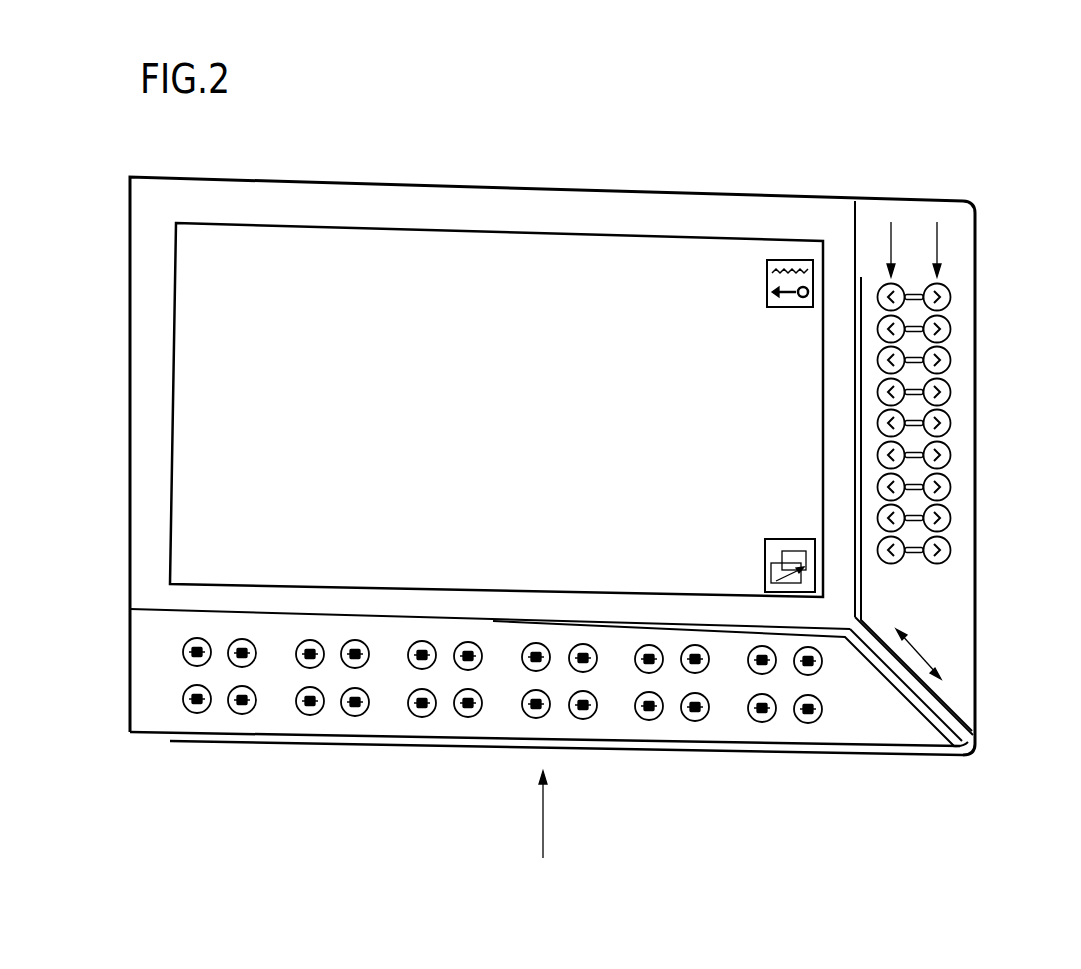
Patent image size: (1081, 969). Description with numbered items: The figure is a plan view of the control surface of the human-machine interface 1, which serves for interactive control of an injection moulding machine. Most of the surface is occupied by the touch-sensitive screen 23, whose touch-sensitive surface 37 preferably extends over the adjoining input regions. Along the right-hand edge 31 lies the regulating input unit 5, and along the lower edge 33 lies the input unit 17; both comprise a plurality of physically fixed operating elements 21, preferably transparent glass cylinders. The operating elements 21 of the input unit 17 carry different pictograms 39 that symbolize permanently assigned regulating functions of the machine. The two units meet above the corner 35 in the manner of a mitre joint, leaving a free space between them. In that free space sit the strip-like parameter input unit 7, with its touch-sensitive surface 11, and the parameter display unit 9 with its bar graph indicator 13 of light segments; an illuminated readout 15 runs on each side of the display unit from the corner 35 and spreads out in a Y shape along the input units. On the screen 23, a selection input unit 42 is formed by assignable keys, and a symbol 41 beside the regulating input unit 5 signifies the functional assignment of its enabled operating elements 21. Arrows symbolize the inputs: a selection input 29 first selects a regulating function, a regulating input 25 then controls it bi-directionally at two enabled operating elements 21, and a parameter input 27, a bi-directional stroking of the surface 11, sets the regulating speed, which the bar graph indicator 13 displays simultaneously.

The human-machine interface 1 is at (516, 160).
The regulating input unit 5 is at (961, 474).
The parameter input unit 7 is at (968, 750).
The parameter display unit 9 is at (878, 648).
The surface 11 is at (944, 722).
The bar graph indicator 13 is at (879, 616).
The illuminated readout 15 is at (752, 633).
The input unit 17 is at (275, 718).
The operating elements 21 is at (945, 303).
The touch-sensitive screen 23 is at (496, 358).
The regulating input 25 is at (937, 242).
The parameter input 27 is at (921, 656).
The selection input 29 is at (543, 828).
The right-hand edge 31 is at (975, 359).
The lower edge 33 is at (712, 749).
The corner 35 is at (972, 748).
The touch-sensitive surface 37 is at (311, 272).
The pictograms 39 is at (892, 422).
The symbol 41 is at (791, 261).
The selection input unit 42 is at (775, 545).